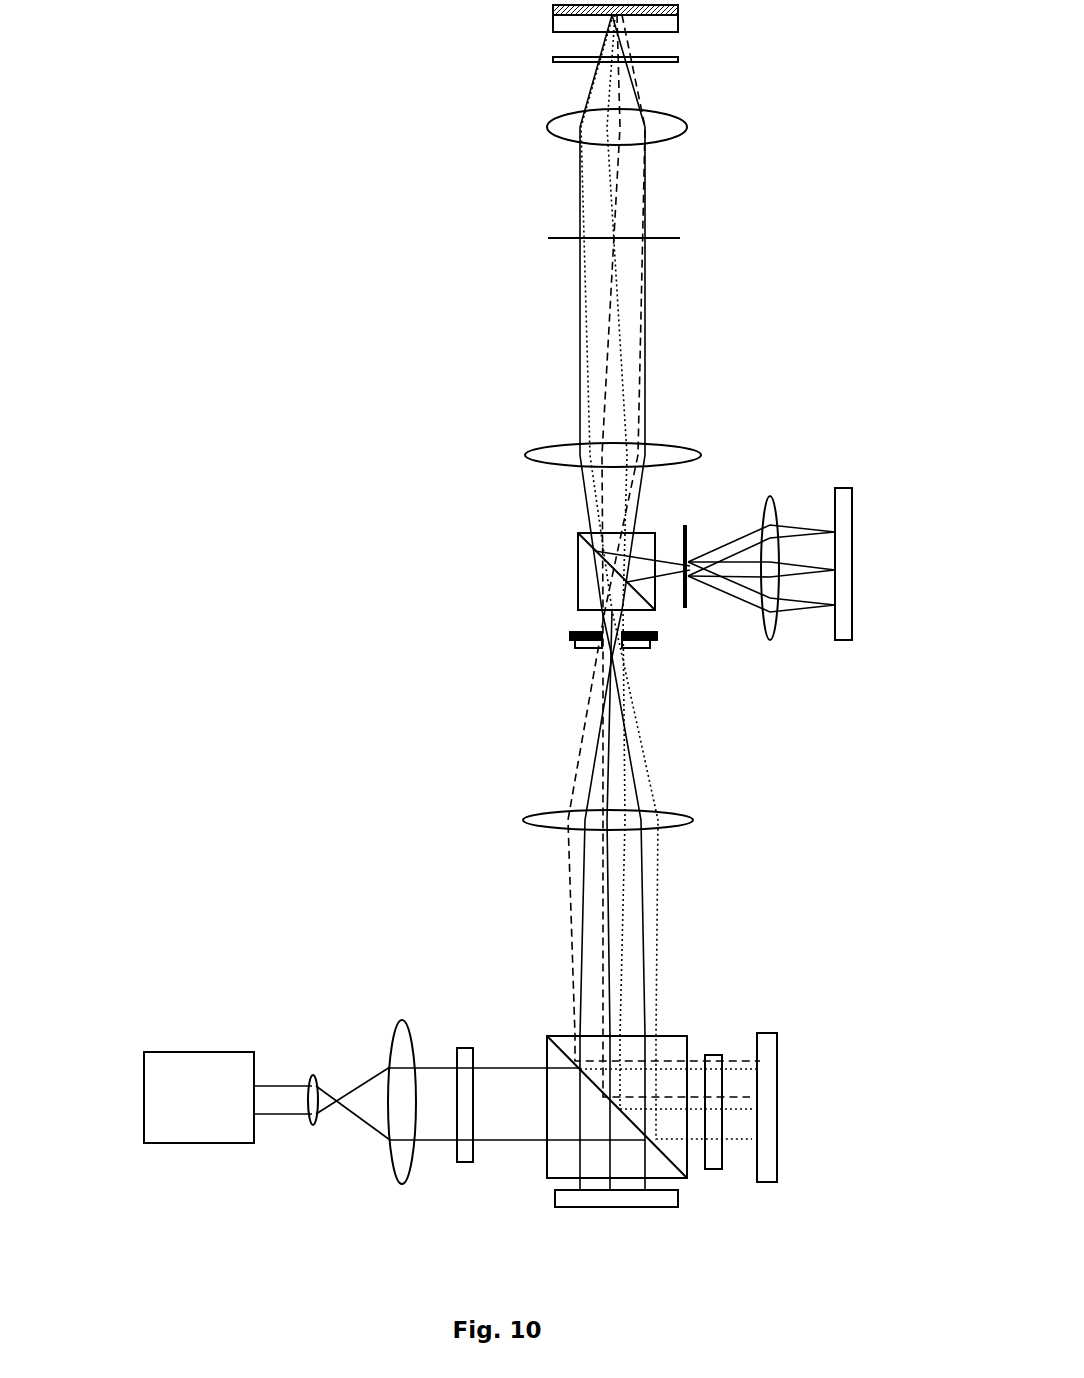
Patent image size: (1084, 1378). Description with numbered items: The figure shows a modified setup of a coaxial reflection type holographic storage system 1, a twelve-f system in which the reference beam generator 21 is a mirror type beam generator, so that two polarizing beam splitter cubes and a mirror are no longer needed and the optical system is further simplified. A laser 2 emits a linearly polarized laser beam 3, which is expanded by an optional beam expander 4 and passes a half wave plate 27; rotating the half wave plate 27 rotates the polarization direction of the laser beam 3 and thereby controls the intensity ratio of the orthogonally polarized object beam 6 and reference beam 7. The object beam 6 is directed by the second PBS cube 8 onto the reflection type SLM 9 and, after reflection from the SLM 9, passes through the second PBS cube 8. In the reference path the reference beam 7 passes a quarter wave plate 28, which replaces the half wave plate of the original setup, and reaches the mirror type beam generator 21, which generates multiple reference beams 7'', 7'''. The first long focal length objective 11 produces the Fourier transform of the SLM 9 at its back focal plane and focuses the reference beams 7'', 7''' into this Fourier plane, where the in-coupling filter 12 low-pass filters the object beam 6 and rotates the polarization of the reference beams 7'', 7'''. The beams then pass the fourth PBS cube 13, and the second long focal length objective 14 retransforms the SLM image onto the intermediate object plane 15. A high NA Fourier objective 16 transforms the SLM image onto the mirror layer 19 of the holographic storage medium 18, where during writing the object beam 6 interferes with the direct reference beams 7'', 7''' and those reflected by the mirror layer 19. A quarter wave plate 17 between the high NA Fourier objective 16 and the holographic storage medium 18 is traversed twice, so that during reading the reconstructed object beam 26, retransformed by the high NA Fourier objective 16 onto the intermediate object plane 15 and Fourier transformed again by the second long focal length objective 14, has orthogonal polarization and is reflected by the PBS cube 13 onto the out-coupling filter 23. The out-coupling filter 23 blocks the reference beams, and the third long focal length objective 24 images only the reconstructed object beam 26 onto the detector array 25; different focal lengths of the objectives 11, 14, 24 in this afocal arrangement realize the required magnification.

The holographic storage system 1 is at (291, 147).
The laser 2 is at (190, 1050).
The laser beam 3 is at (275, 1082).
The beam expander 4 is at (413, 1190).
The object beam 6 is at (575, 1195).
The reference beam 7 is at (752, 1032).
The reference beam 7'' is at (701, 923).
The reference beam 7''' is at (530, 945).
The second PBS cube 8 is at (683, 1032).
The reflection type SLM 9 is at (615, 1205).
The first long focal length objective 11 is at (697, 820).
The in-coupling filter 12 is at (565, 643).
The fourth PBS cube 13 is at (572, 568).
The second long focal length objective 14 is at (528, 455).
The intermediate object plane 15 is at (545, 238).
The high NA Fourier objective 16 is at (545, 128).
The quarter wave plate 17 is at (549, 62).
The holographic storage medium 18 is at (688, 25).
The mirror layer 19 is at (548, 12).
The beam generator 21 is at (768, 1185).
The out-coupling filter 23 is at (690, 523).
The third long focal length objective 24 is at (765, 640).
The detector array 25 is at (840, 645).
The reconstructed object beam 26 is at (662, 580).
The half wave plate 27 is at (465, 1165).
The quarter wave plate 28 is at (712, 1172).